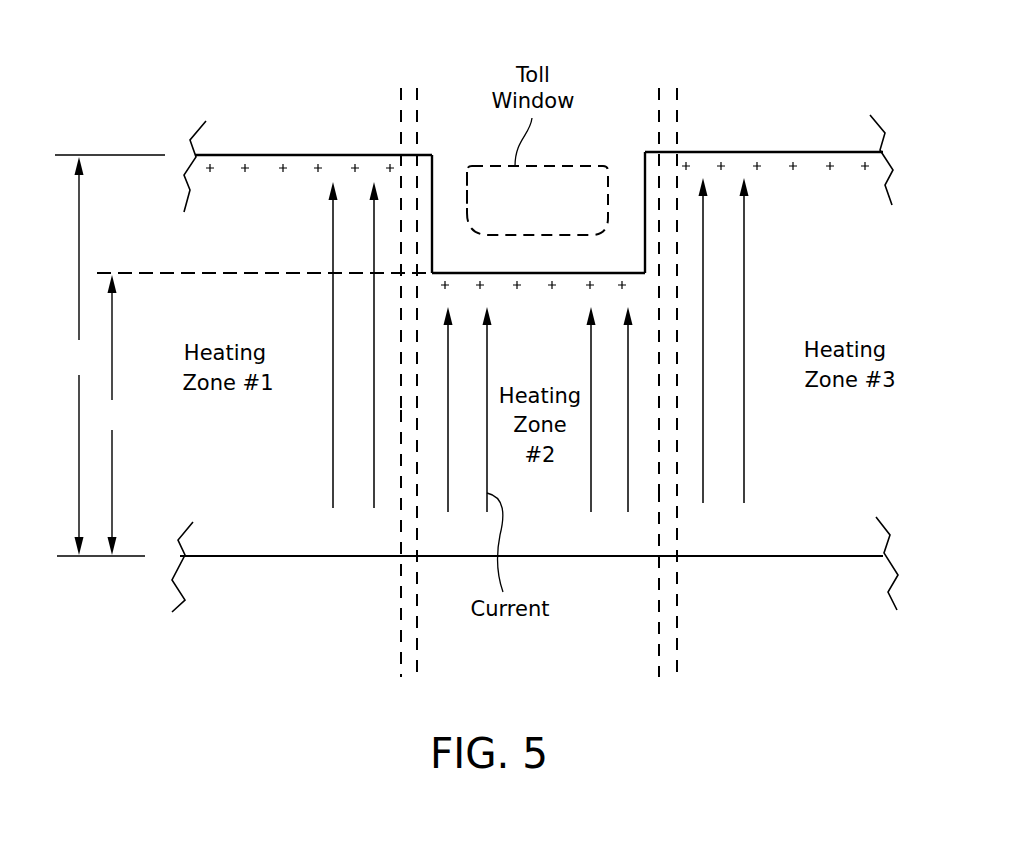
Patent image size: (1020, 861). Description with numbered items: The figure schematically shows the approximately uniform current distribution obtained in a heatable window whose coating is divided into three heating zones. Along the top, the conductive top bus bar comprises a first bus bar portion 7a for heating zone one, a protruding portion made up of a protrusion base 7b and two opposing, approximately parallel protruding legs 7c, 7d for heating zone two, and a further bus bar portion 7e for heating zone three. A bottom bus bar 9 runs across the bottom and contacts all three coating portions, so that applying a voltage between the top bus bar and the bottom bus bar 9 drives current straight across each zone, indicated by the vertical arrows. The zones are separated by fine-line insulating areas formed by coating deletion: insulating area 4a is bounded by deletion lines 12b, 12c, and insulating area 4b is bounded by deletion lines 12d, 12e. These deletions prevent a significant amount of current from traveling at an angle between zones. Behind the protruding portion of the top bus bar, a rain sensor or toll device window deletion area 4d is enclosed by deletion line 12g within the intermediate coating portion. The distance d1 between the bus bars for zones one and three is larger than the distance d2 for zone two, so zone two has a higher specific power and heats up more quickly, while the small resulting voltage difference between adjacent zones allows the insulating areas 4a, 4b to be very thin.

The first bus bar portion 7a is at (313, 155).
The protrusion base 7b is at (555, 272).
The protruding leg 7c is at (433, 197).
The protruding leg 7d is at (644, 173).
The bus bar portion 7e is at (723, 152).
The insulating area 4a is at (401, 422).
The insulating area 4b is at (662, 528).
The rain sensor or toll device window deletion area 4d is at (488, 183).
The deletion line 12b is at (401, 385).
The deletion line 12c is at (417, 493).
The deletion line 12d is at (659, 453).
The deletion line 12e is at (680, 525).
The deletion line 12g is at (578, 166).
The bottom bus bar 9 is at (243, 557).
The distance between bus bars d1 is at (78, 356).
The distance between bus bars d2 is at (112, 415).